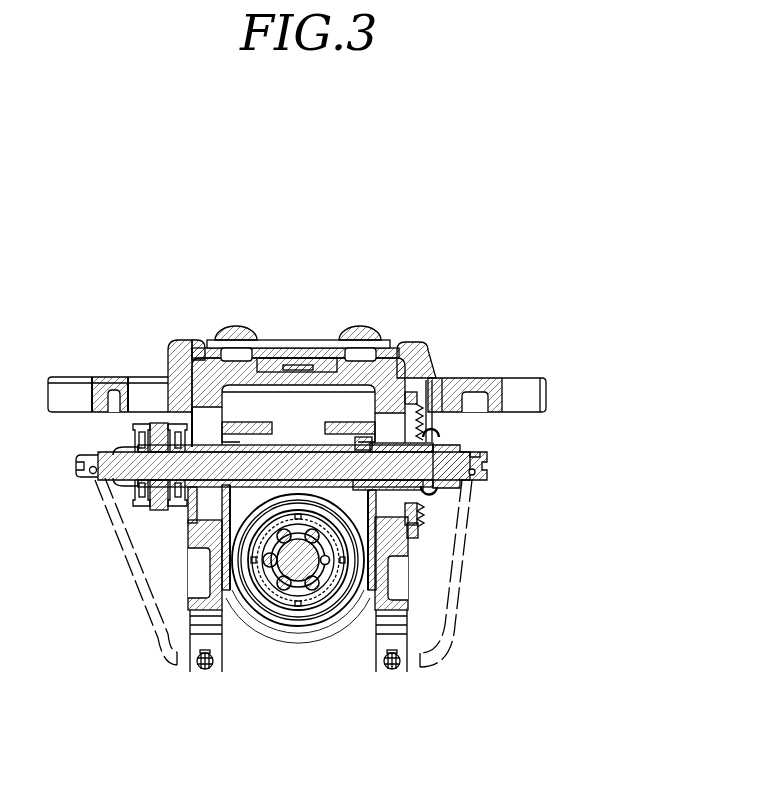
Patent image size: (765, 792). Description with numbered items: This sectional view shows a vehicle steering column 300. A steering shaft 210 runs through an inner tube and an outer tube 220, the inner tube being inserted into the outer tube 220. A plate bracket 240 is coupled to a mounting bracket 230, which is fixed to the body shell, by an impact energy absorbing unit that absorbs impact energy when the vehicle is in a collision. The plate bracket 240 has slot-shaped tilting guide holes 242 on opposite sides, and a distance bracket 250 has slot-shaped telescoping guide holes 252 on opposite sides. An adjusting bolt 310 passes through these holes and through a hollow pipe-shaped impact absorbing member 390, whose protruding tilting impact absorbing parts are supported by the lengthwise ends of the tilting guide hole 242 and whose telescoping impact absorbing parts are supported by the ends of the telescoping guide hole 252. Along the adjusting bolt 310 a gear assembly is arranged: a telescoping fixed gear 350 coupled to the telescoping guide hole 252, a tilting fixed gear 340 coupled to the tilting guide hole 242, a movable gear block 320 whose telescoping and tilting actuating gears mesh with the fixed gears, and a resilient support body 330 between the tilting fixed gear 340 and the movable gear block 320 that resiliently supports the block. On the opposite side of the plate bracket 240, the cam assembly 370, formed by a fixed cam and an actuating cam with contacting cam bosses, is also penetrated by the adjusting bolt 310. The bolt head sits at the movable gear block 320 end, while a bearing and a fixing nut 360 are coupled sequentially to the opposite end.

The steering column 300 is at (82, 188).
The steering shaft 210 is at (300, 572).
The outer tube 220 is at (297, 627).
The mounting bracket 230 is at (183, 343).
The plate bracket 240 is at (187, 537).
The tilting guide hole 242 is at (413, 508).
The distance bracket 250 is at (226, 548).
The telescoping guide hole 252 is at (437, 487).
The adjusting bolt 310 is at (122, 488).
The movable gear block 320 is at (421, 412).
The resilient support body 330 is at (440, 432).
The tilting fixed gear 340 is at (437, 395).
The telescoping fixed gear 350 is at (389, 443).
The fixing nut 360 is at (113, 444).
The bearing 370 is at (157, 422).
The impact absorbing member 390 is at (313, 427).